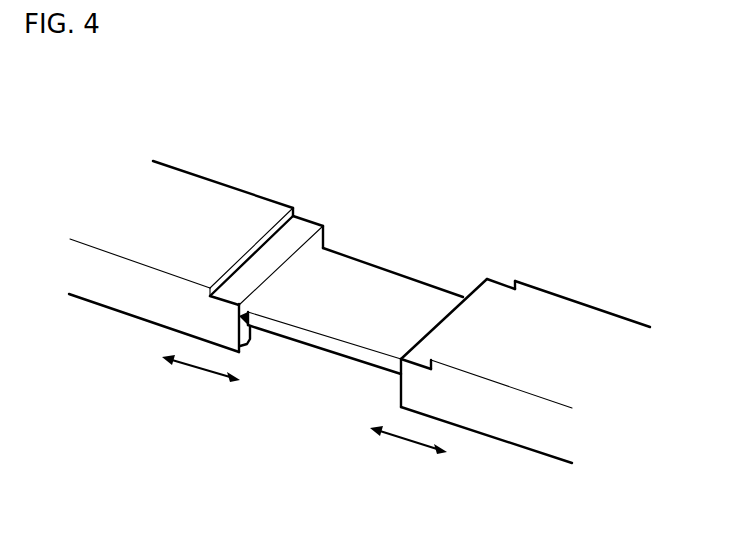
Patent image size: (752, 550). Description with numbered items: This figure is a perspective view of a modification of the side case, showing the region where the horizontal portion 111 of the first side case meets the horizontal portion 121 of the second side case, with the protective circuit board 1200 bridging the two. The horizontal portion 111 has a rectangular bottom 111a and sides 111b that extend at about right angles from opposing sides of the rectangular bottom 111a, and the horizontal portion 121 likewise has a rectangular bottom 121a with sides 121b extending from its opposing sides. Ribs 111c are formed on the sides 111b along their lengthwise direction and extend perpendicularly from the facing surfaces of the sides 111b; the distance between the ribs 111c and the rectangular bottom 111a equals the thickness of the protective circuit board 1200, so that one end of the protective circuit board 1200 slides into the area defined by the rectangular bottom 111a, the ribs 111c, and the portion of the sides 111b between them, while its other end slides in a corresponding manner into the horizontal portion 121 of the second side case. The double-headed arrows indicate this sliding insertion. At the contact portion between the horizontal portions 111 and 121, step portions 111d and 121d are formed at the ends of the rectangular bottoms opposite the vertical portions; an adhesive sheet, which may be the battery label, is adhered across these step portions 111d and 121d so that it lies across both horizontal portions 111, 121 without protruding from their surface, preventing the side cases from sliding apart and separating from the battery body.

The horizontal portion 111 is at (182, 150).
The rectangular bottom 111a is at (240, 207).
The sides 111b is at (128, 300).
The ribs 111c is at (258, 330).
The step portion 111d is at (297, 237).
The protective circuit board 1200 is at (382, 287).
The horizontal portion 121 is at (645, 306).
The rectangular bottom 121a is at (540, 318).
The sides 121b is at (510, 425).
The step portion 121d is at (490, 290).